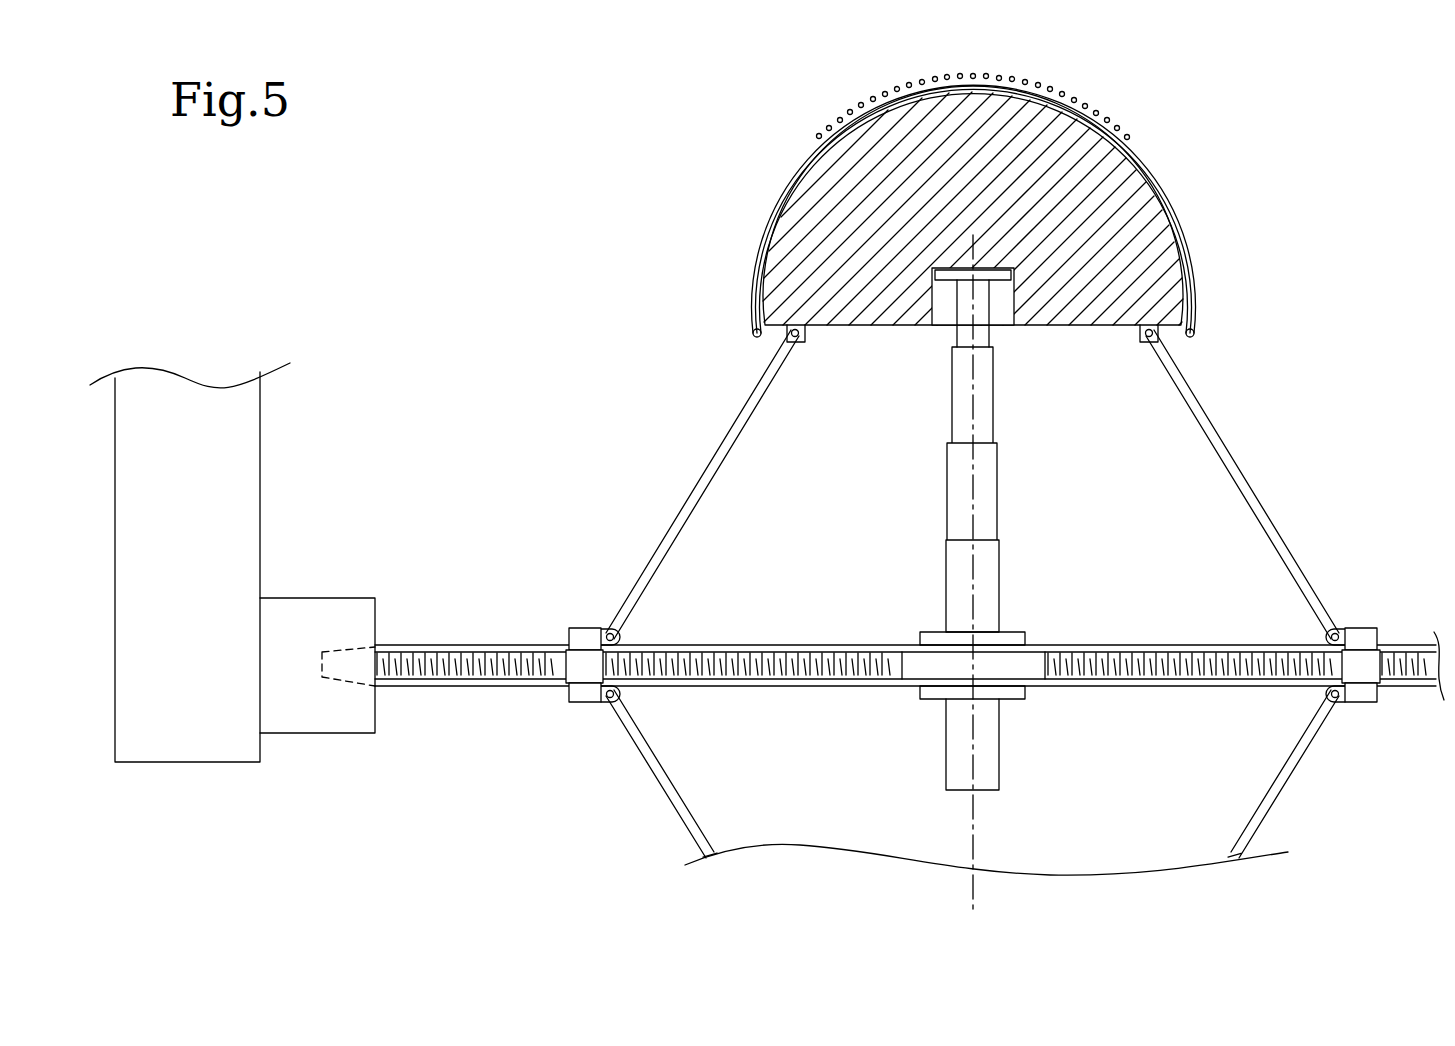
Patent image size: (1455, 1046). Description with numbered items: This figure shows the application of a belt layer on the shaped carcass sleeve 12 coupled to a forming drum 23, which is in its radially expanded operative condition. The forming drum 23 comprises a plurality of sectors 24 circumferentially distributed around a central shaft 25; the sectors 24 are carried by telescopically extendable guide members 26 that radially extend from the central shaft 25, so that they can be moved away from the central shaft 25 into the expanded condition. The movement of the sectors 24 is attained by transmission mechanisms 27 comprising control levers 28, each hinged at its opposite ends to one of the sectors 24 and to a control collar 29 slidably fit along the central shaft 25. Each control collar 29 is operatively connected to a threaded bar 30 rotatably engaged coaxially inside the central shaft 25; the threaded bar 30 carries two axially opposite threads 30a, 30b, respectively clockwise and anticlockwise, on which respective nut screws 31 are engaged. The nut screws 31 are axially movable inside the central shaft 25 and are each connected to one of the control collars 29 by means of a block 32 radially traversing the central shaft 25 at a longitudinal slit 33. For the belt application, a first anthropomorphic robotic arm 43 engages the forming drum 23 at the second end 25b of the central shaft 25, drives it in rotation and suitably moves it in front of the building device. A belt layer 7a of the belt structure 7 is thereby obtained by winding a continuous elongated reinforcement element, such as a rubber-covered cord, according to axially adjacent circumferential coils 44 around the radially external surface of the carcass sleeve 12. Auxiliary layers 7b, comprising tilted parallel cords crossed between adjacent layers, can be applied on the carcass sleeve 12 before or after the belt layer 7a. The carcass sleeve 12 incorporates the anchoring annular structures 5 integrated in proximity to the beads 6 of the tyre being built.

The anchoring annular structure 5 is at (748, 326).
The bead 6 is at (740, 338).
The belt structure 7 is at (956, 188).
The belt layer 7a is at (828, 128).
The auxiliary layer 7b is at (810, 148).
The carcass sleeve 12 is at (766, 242).
The forming drum 23 is at (1021, 218).
The sector 24 is at (966, 205).
The central shaft 25 is at (884, 636).
The second end 25b is at (349, 650).
The telescopically extendable guide member 26 is at (990, 838).
The transmission mechanism 27 is at (1316, 548).
The control lever 28 is at (672, 792).
The control collar 29 is at (583, 693).
The threaded bar 30 is at (901, 647).
The thread 30a is at (1196, 665).
The thread 30b is at (771, 663).
The nut screw 31 is at (580, 663).
The block 32 is at (576, 628).
The longitudinal slit 33 is at (1133, 650).
The first anthropomorphic robotic arm 43 is at (187, 700).
The circumferential coil 44 is at (1120, 128).